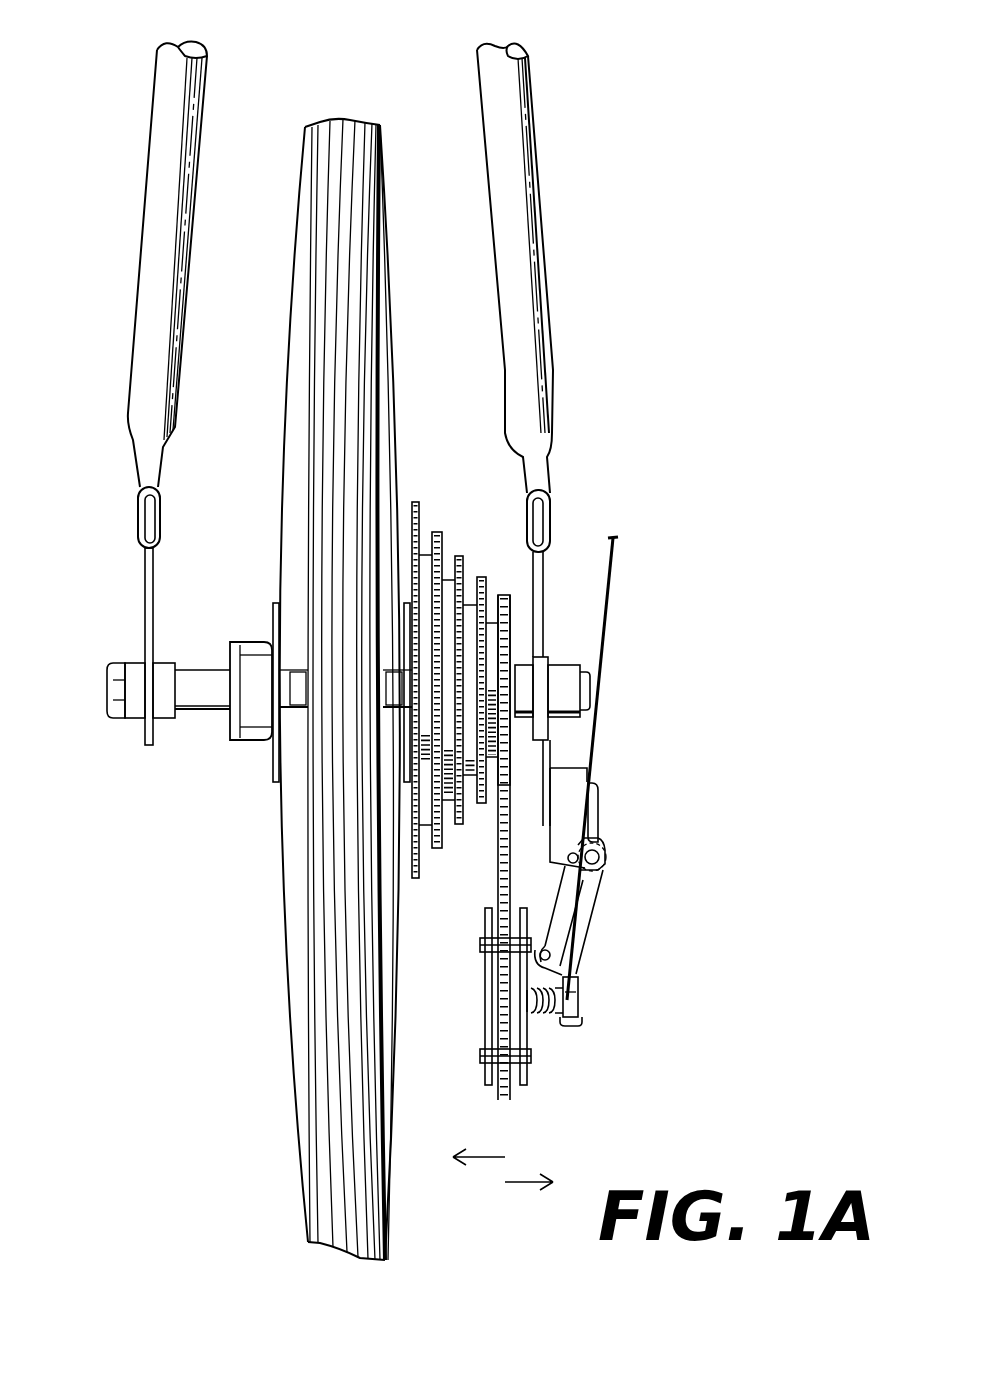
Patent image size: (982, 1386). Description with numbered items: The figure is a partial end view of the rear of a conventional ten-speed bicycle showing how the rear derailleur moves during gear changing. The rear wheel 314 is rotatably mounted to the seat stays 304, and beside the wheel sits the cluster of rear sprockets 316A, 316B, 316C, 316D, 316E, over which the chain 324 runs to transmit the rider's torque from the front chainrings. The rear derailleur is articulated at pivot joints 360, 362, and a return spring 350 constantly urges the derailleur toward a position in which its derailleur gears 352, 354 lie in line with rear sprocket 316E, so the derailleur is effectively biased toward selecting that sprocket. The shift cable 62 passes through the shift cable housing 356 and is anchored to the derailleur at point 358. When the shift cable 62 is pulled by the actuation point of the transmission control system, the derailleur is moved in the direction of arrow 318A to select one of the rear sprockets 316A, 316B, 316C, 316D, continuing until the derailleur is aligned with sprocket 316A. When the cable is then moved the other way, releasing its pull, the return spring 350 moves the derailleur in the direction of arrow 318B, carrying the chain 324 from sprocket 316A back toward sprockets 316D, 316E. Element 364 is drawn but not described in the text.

The seat stays 304 is at (157, 262).
The rear wheel 314 is at (370, 226).
The rear sprocket 316A is at (415, 502).
The rear sprocket 316B is at (437, 532).
The rear sprocket 316C is at (459, 556).
The rear sprocket 316D is at (483, 577).
The rear sprocket 316E is at (510, 596).
The chain 324 is at (498, 878).
The shift cable 62 is at (613, 591).
The pivot joint 360 is at (568, 792).
The shift cable housing 356 is at (598, 846).
The pivot joint 362 is at (607, 860).
The return spring 350 is at (600, 893).
The anchor point 358 is at (582, 992).
The spring 364 is at (582, 1002).
The derailleur gear 352 is at (490, 957).
The derailleur gear 354 is at (490, 1078).
The arrow 318A is at (485, 1157).
The arrow 318B is at (525, 1182).